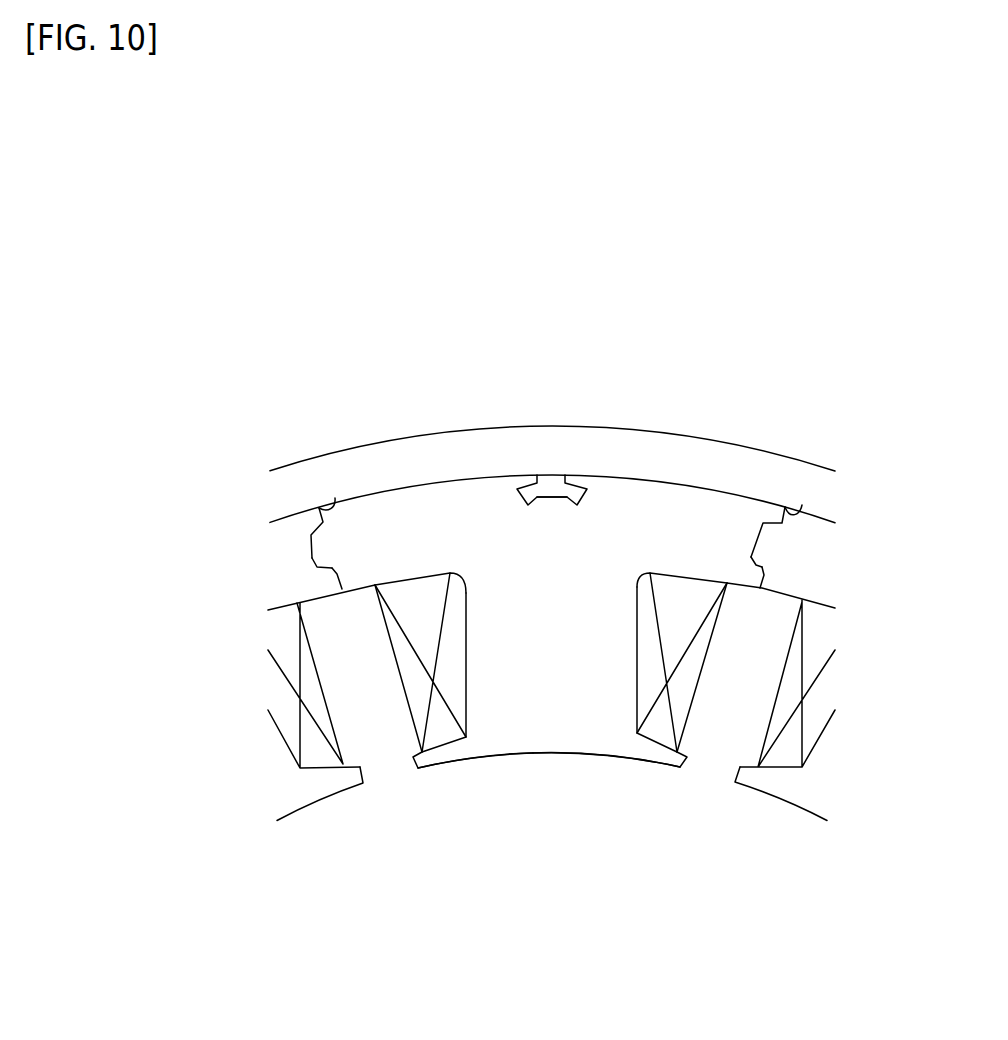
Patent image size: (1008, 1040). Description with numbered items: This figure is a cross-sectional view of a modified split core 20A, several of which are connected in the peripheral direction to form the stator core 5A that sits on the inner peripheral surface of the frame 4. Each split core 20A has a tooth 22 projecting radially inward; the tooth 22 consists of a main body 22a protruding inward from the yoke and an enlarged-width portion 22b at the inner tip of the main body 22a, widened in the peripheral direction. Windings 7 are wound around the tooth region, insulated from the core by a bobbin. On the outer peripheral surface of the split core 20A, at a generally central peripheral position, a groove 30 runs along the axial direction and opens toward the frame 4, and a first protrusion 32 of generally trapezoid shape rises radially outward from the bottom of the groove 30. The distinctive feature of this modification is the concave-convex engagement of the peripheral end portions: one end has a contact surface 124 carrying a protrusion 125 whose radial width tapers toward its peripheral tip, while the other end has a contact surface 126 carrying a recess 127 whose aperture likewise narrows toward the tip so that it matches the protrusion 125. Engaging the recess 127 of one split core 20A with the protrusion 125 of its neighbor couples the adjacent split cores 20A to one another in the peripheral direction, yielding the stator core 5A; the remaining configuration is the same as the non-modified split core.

The frame 4 is at (688, 465).
The stator core 5A is at (423, 481).
The groove 30 is at (548, 479).
The first protrusion 32 is at (555, 503).
The contact surface 124 is at (336, 580).
The protrusion 125 is at (323, 548).
The contact surface 126 is at (335, 498).
The recess 127 is at (328, 567).
The windings 7 is at (442, 728).
The split core 20A is at (319, 803).
The tooth 22 is at (603, 837).
The main body 22a is at (540, 650).
The enlarged-width portion 22b is at (508, 733).